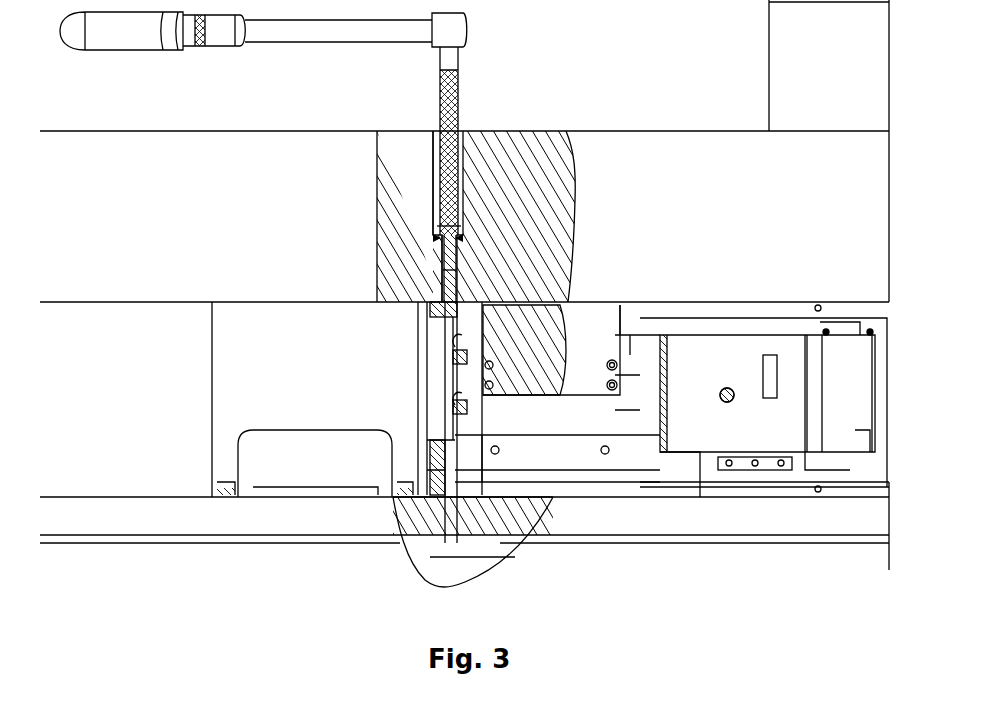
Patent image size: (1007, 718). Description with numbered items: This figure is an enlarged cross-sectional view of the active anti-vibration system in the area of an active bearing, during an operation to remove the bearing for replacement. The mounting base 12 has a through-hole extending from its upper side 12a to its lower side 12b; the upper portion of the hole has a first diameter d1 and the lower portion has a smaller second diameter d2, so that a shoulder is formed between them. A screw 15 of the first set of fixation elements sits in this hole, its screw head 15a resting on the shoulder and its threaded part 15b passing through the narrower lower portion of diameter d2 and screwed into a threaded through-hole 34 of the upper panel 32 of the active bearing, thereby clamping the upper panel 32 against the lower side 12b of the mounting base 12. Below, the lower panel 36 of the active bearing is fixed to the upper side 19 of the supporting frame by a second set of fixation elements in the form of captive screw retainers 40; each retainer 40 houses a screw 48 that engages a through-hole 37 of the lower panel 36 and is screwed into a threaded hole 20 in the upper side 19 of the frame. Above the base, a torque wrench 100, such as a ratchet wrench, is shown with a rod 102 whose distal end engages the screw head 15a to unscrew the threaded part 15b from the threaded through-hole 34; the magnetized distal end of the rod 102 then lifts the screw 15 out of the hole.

The torque wrench 100 is at (200, 74).
The rod 102 is at (462, 108).
The mounting base 12 is at (860, 240).
The upper side 12a is at (679, 130).
The lower side 12b is at (127, 303).
The screw 15 is at (478, 256).
The screw head 15a is at (440, 229).
The threaded part 15b is at (459, 272).
The first diameter d1 is at (467, 163).
The second diameter d2 is at (437, 260).
The threaded through-hole 34 is at (433, 310).
The captive screw retainer 40 is at (440, 412).
The upper panel 32 is at (873, 312).
The lower panel 36 is at (868, 490).
The upper side 19 is at (800, 500).
The threaded hole 20 is at (445, 531).
The through-hole 37 is at (440, 489).
The screw 48 is at (458, 501).